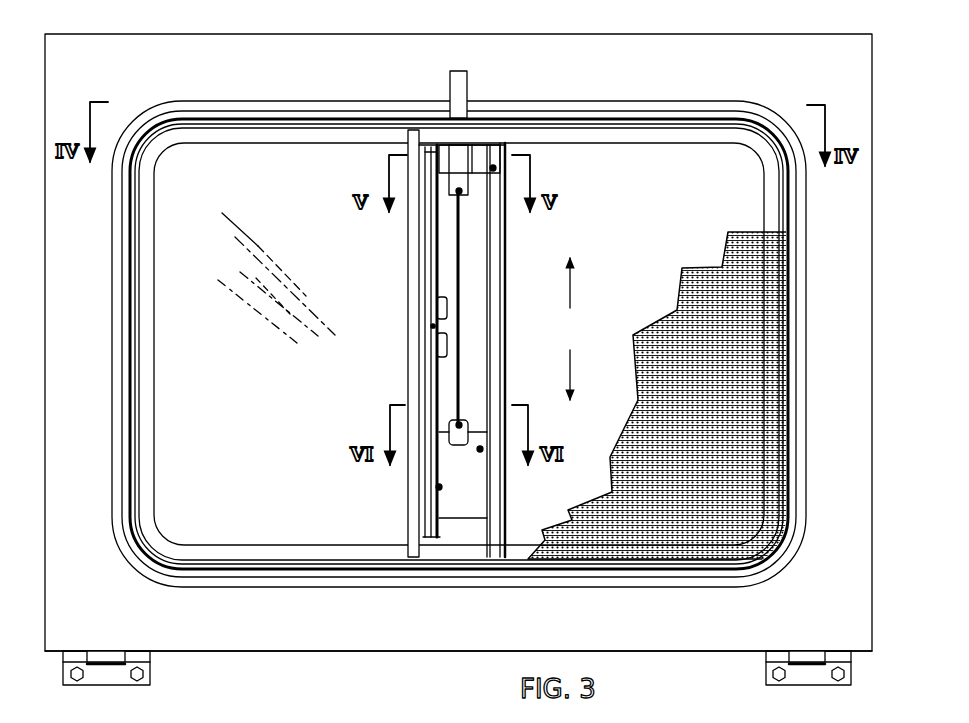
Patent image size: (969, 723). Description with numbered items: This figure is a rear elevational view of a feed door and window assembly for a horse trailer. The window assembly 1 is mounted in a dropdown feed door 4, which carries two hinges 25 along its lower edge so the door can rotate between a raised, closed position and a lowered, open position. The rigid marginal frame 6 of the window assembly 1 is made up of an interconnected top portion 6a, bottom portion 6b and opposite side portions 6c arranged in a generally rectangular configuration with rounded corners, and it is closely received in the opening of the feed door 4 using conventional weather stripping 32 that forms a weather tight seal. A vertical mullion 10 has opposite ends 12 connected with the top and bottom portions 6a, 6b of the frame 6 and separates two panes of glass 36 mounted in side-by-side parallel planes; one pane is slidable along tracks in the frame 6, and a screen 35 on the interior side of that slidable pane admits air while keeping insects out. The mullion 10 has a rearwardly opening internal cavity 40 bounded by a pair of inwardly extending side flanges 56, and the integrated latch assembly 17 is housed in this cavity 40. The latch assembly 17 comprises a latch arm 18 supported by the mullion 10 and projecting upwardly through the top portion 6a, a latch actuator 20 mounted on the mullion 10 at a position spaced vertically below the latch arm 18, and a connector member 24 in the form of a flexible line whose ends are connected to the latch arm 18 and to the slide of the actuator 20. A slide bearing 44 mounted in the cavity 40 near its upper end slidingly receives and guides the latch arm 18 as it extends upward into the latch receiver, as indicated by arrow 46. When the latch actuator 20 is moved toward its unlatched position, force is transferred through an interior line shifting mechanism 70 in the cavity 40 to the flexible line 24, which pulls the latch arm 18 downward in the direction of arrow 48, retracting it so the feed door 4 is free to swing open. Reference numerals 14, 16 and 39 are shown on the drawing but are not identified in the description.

The window assembly 1 is at (160, 80).
The dropdown feed door 4 is at (718, 32).
The marginal frame 6 is at (781, 130).
The top portion of frame 6a is at (617, 101).
The bottom portion of frame 6b is at (318, 590).
The side portions of frame 6c is at (111, 233).
The mullion 10 is at (487, 332).
The opposite ends of mullion 12 is at (408, 270).
The wall panel 14 is at (252, 66).
The lower wall panel edge 16 is at (636, 632).
The latch assembly 17 is at (436, 80).
The latch arm 18 is at (470, 89).
The latch actuator 20 is at (487, 494).
The connector member 24 is at (420, 236).
The hinges 25 is at (113, 676).
The weather stripping 32 is at (790, 410).
The screen 35 is at (750, 340).
The panes of glass 36 is at (748, 203).
The upper latch 39 is at (508, 177).
The internal cavity 40 is at (487, 241).
The slide bearing 44 is at (462, 155).
The arrow 46 is at (572, 292).
The arrow 48 is at (572, 365).
The side flanges 56 is at (405, 333).
The interior line shifting mechanism 70 is at (466, 425).